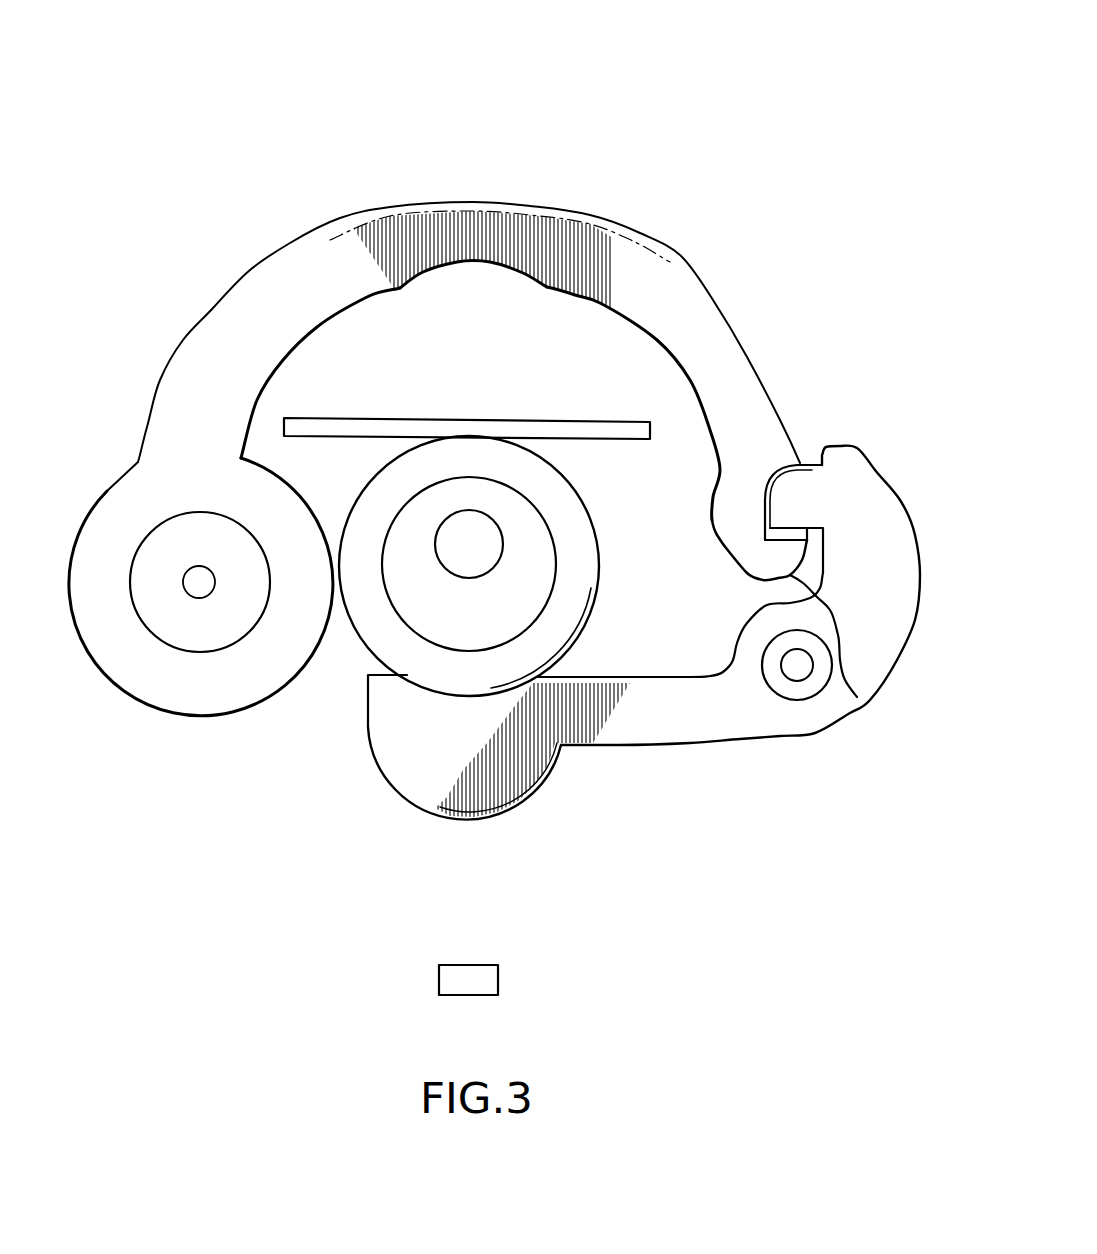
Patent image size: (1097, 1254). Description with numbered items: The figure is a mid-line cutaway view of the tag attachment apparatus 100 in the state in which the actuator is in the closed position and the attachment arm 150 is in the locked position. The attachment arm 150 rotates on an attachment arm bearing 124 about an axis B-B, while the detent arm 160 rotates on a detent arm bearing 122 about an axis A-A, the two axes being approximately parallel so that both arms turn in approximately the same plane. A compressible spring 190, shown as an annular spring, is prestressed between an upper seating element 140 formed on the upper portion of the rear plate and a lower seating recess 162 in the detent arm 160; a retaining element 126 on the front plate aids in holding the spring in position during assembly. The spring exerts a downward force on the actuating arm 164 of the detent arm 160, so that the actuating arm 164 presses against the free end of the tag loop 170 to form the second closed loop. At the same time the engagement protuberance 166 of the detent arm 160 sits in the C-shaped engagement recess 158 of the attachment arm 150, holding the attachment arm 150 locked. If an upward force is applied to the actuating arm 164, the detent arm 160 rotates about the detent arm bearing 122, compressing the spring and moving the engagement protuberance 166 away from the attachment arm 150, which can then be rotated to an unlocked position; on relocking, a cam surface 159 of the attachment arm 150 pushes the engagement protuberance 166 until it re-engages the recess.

The tag attachment apparatus 100 is at (612, 142).
The attachment arm 150 is at (215, 308).
The C-shaped engagement recess 158 is at (765, 500).
The engagement protuberance 166 is at (812, 467).
The detent arm 160 is at (920, 580).
The cam surface 159 is at (857, 697).
The lower seating recess 162 is at (468, 697).
The actuating arm 164 is at (510, 812).
The upper seating element 140 is at (453, 417).
The retaining element 126 is at (503, 552).
The compressible spring 190 is at (367, 637).
The attachment arm bearing 124 is at (201, 606).
The detent arm bearing 122 is at (784, 760).
The tag loop 170 is at (438, 980).
The axis B-B is at (199, 582).
The axis A-A is at (797, 665).